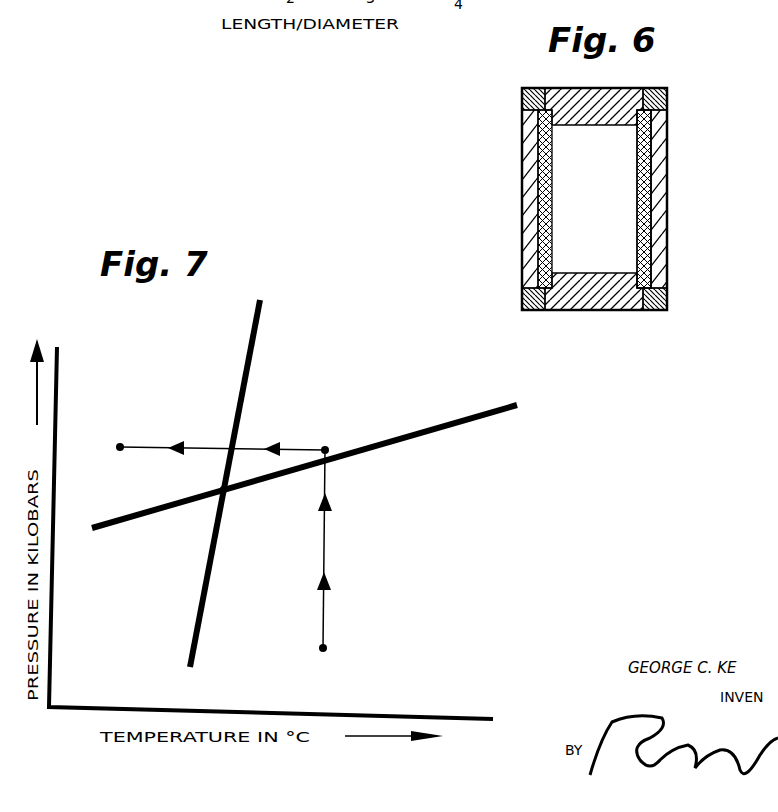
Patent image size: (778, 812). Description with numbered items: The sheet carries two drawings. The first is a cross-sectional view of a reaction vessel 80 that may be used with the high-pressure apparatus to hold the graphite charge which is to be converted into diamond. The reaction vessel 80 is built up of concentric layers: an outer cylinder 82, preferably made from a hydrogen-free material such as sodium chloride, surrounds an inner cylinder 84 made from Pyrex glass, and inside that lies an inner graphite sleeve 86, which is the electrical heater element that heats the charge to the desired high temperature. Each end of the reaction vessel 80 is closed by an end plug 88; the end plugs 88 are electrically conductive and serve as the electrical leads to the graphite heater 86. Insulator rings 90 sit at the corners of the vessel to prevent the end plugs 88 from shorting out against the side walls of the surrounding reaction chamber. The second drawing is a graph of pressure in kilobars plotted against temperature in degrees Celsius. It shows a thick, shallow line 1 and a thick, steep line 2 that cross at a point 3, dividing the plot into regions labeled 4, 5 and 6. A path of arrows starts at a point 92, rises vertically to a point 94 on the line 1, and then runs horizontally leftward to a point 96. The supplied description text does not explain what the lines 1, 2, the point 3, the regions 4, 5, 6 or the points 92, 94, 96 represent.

In FIG. 6, the reaction vessel 80 is at (500, 203).
In FIG. 6, the outer cylinder 82 is at (660, 258).
In FIG. 6, the inner cylinder 84 is at (648, 190).
In FIG. 6, the inner graphite sleeve 86 is at (637, 194).
In FIG. 6, the end plug 88 is at (630, 90).
In FIG. 6, the insulator ring 90 is at (667, 106).
In FIG. 7, the phase boundary line 1 is at (426, 433).
In FIG. 7, the phase boundary line 2 is at (241, 400).
In FIG. 7, the intersection point of boundaries 3 is at (226, 492).
In FIG. 7, the phase region 4 is at (318, 376).
In FIG. 7, the phase region 5 is at (258, 287).
In FIG. 7, the phase region 6 is at (527, 395).
In FIG. 7, the starting pressure-temperature point 92 is at (327, 648).
In FIG. 7, the intermediate pressure-temperature point 94 is at (329, 446).
In FIG. 7, the final pressure-temperature point 96 is at (120, 444).